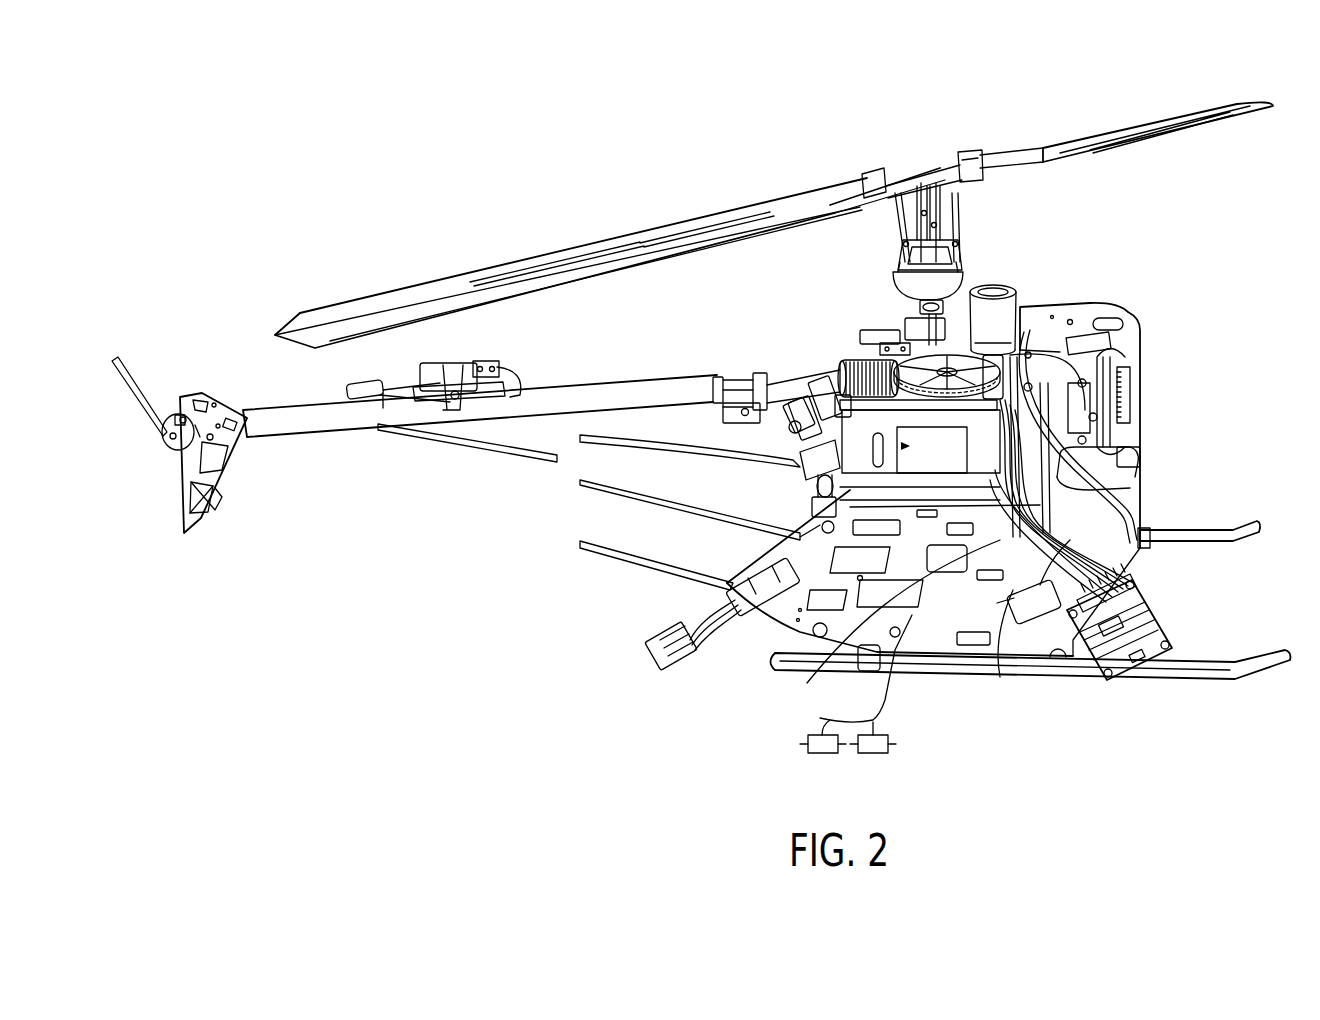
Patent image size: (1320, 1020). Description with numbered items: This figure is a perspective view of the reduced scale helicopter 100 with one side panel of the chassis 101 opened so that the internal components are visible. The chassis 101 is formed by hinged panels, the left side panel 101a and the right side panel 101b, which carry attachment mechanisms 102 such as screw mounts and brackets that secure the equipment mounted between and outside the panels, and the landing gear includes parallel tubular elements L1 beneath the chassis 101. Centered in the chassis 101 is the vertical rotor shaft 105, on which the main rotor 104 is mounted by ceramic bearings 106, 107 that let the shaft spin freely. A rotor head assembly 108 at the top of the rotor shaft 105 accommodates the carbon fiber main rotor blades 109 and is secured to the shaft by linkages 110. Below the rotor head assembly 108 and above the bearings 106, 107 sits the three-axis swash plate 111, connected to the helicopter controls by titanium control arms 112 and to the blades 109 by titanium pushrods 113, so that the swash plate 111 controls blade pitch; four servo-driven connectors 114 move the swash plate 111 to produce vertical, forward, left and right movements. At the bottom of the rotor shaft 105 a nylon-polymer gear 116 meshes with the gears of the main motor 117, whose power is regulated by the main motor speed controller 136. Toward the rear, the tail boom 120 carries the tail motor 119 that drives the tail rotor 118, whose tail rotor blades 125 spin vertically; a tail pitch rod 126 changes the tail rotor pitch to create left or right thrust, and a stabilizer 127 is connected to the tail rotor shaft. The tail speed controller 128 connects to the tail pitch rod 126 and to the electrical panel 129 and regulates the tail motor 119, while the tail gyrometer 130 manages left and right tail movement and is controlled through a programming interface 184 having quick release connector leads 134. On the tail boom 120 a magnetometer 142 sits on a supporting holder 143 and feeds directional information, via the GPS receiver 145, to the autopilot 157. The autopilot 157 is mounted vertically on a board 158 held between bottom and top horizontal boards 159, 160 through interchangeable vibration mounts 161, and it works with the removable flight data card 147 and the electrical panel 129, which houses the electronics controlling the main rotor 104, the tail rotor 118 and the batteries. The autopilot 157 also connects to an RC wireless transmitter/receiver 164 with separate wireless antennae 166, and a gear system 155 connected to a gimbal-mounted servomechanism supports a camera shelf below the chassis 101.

The reduced scale helicopter 100 is at (512, 187).
The chassis 101 is at (1140, 417).
The left side panel 101a is at (1077, 305).
The right side panel 101b is at (763, 628).
The attachment mechanisms 102 is at (1028, 352).
The main rotor 104 is at (1076, 194).
The vertical rotor shaft 105 is at (967, 283).
The bearing 106 is at (867, 365).
The bearing 107 is at (1000, 287).
The rotor head assembly 108 is at (879, 207).
The main rotor blades 109 is at (643, 232).
The linkages 110 is at (953, 200).
The three-axis swash plate 111 is at (887, 266).
The swash plate control arms 112 is at (957, 250).
The pushrods 113 is at (955, 228).
The connectors 114 is at (887, 350).
The gear 116 is at (860, 378).
The main motor 117 is at (1027, 303).
The tail rotor 118 is at (210, 364).
The tail motor 119 is at (853, 403).
The tail boom 120 is at (560, 385).
The tail rotor blades 125 is at (127, 357).
The tail pitch rod 126 is at (293, 437).
The stabilizer 127 is at (220, 400).
The tail speed controller 128 is at (720, 407).
The electrical panel 129 is at (1145, 593).
The tail gyrometer 130 is at (783, 413).
The quick release connector leads 134 is at (665, 657).
The main motor speed controller 136 is at (1112, 405).
The magnetometer 142 is at (477, 365).
The supporting holder 143 is at (460, 363).
The GPS receiver 145 is at (377, 385).
The flight data card 147 is at (827, 653).
The gear system 155 is at (1215, 530).
The autopilot 157 is at (807, 442).
The board 158 is at (795, 468).
The bottom horizontal board 159 is at (823, 483).
The top horizontal board 160 is at (765, 380).
The vibration mounts 161 is at (840, 410).
The RC wireless transmitter/receiver 164 is at (1033, 613).
The wireless antennae 166 is at (820, 718).
The programming interface 184 is at (737, 580).
The parallel tubular elements L1 is at (970, 677).